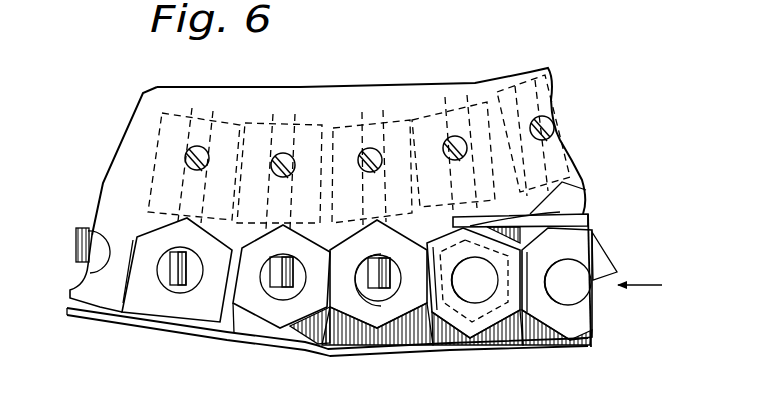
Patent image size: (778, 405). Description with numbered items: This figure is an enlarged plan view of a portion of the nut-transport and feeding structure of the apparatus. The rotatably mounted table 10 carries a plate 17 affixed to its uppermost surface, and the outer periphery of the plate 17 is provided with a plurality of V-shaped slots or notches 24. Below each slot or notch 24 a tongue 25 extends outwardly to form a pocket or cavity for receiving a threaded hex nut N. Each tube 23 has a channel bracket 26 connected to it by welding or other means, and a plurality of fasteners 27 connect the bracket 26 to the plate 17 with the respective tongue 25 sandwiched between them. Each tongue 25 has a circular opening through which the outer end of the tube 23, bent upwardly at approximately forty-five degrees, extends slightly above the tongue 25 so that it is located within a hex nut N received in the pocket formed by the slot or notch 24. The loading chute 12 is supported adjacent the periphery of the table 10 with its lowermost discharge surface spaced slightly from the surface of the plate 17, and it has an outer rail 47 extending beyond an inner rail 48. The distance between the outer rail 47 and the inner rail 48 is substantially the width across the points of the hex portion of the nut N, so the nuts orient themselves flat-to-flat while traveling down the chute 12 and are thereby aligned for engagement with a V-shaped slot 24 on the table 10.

The table 10 is at (568, 138).
The loading chute 12 is at (432, 351).
The plate 17 is at (122, 148).
The tube 23 is at (75, 214).
The V-shaped slot or notch 24 is at (150, 235).
The tongue 25 is at (175, 318).
The channel bracket 26 is at (422, 105).
The fasteners 27 is at (357, 148).
The outer rail 47 is at (487, 348).
The inner rail 48 is at (548, 214).
The hex nut N is at (260, 310).